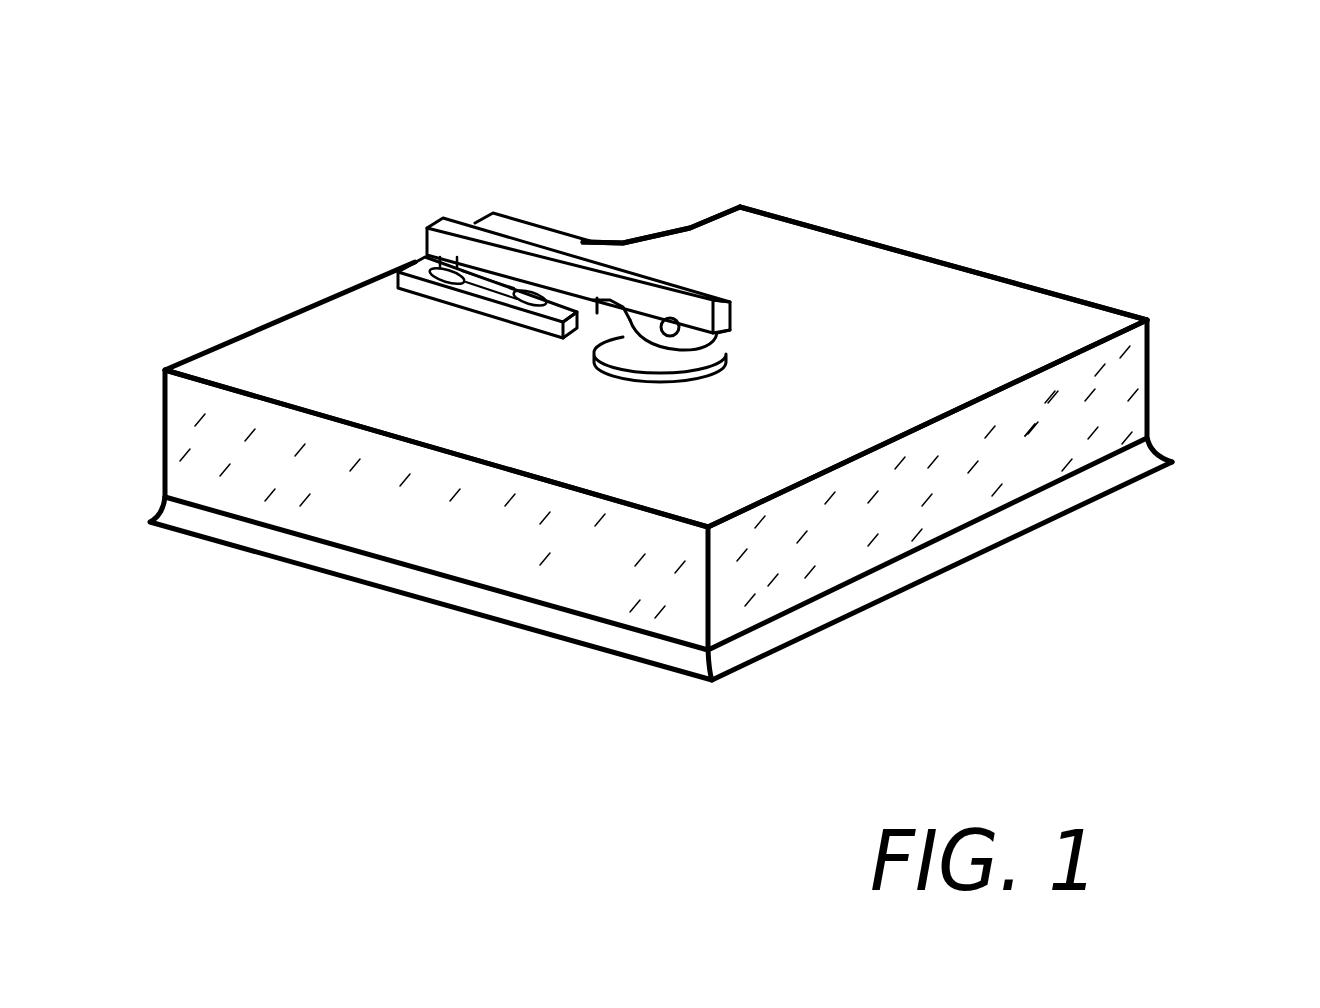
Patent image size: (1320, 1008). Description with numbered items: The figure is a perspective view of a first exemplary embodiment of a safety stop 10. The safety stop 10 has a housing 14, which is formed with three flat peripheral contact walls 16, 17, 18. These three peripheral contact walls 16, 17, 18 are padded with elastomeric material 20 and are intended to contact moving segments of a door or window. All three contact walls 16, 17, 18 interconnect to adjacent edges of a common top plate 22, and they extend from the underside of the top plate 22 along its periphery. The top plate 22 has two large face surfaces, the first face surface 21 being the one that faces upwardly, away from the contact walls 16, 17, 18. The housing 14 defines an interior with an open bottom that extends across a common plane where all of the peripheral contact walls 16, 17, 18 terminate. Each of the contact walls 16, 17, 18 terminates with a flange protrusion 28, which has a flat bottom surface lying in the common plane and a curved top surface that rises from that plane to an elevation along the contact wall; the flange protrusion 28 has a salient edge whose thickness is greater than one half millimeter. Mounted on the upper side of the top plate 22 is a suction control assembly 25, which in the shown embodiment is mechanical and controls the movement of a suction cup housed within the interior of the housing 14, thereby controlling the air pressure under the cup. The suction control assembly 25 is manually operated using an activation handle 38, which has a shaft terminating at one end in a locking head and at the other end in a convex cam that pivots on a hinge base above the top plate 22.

The safety stop 10 is at (938, 145).
The housing 14 is at (262, 372).
The peripheral contact wall 16 is at (947, 493).
The peripheral contact wall 17 is at (370, 513).
The peripheral contact wall 18 is at (1152, 358).
The elastomeric material 20 is at (1063, 413).
The first face surface 21 is at (938, 312).
The top plate 22 is at (787, 233).
The suction control assembly 25 is at (727, 277).
The flange protrusion 28 is at (1127, 468).
The activation handle 38 is at (438, 198).